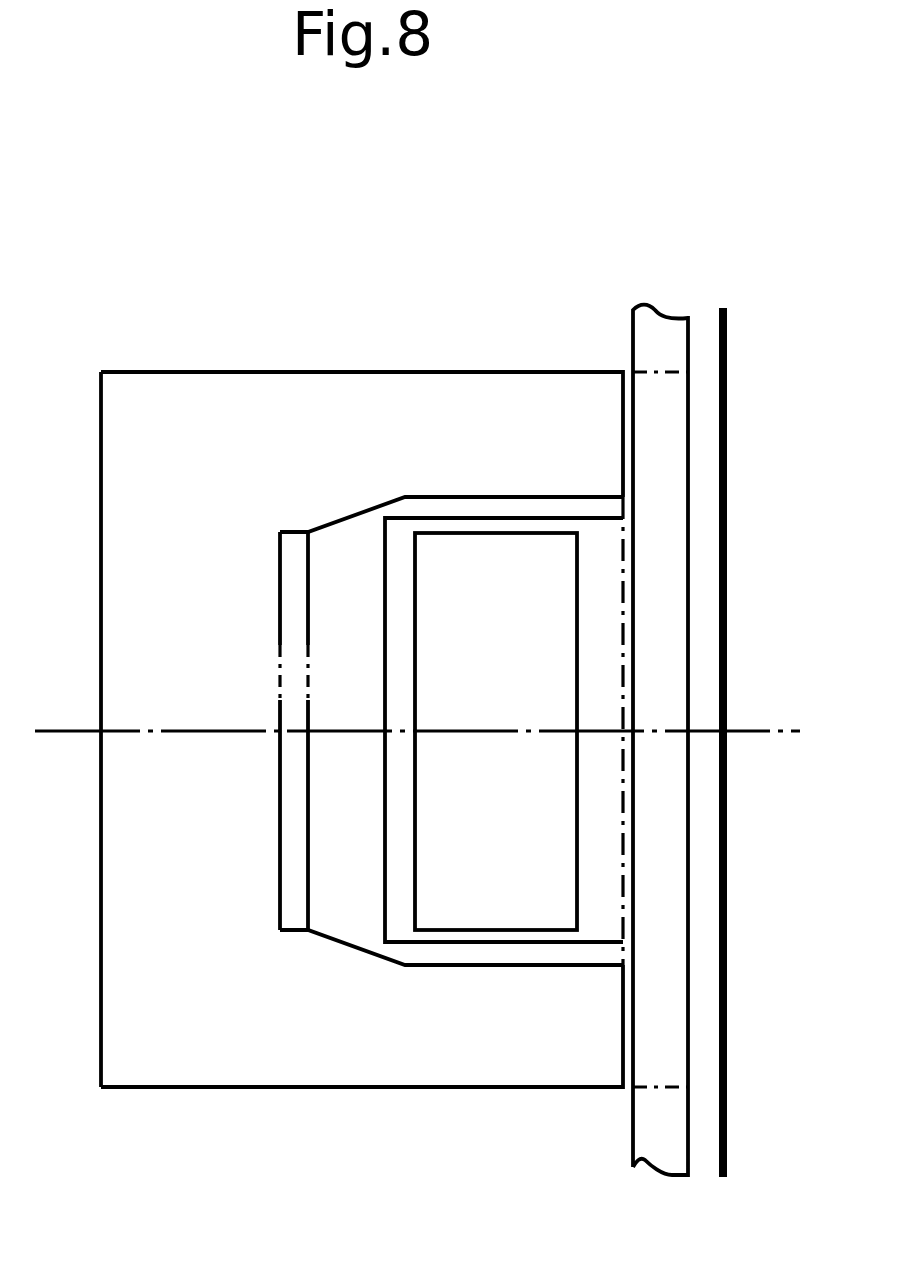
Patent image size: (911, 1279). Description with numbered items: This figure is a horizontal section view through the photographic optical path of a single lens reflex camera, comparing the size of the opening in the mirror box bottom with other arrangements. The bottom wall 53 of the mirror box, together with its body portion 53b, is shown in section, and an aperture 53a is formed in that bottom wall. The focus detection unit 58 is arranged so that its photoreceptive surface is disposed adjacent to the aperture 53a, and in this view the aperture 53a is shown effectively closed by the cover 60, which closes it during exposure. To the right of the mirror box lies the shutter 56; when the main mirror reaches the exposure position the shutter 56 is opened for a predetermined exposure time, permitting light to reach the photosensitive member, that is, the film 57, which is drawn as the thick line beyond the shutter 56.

The bottom wall of the mirror box 53 is at (252, 372).
The aperture 53a is at (490, 518).
The holder body 53b is at (163, 427).
The shutter 56 is at (658, 345).
The film 57 is at (780, 330).
The focus detection unit 58 is at (353, 516).
The cover 60 is at (553, 558).